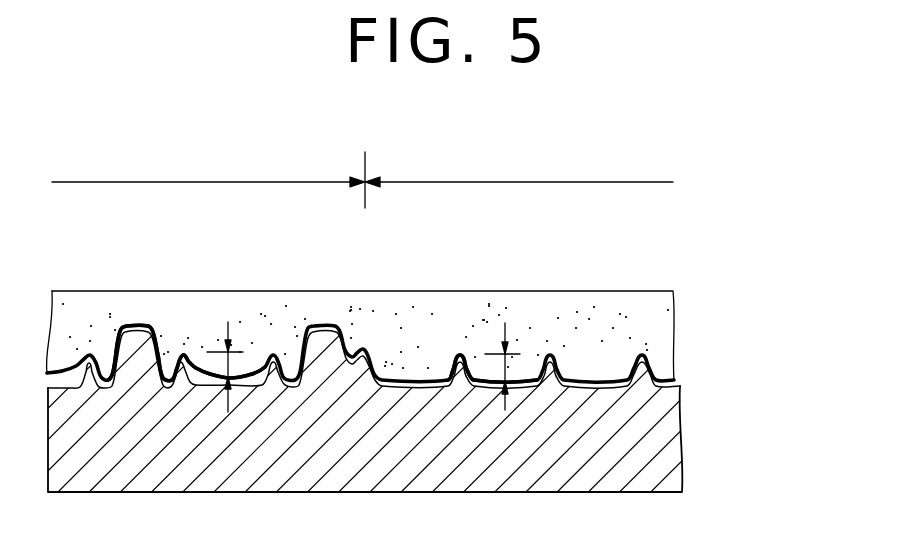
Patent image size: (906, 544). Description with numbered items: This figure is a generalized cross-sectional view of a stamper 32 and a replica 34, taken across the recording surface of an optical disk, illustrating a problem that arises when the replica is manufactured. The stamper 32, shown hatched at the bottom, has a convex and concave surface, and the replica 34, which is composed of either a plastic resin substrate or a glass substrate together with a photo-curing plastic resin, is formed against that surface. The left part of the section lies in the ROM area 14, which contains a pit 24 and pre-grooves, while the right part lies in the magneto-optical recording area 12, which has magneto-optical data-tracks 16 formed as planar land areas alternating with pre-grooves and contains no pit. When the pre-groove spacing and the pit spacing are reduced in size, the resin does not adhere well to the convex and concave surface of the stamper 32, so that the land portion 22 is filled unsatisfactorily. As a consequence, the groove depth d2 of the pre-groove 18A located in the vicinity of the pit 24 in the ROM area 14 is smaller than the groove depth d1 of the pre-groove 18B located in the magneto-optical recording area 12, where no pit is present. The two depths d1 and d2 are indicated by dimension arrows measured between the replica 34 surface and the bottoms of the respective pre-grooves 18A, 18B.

The magneto-optical recording area 12 is at (519, 167).
The ROM area 14 is at (208, 177).
The magneto-optical data-tracks 16 is at (531, 373).
The pre-groove 18A is at (184, 356).
The pre-groove 18B is at (462, 354).
The land portion 22 is at (224, 401).
The pit 24 is at (140, 324).
The stamper 32 is at (645, 423).
The replica 34 is at (650, 330).
The groove depth d1 is at (514, 365).
The groove depth d2 is at (237, 365).